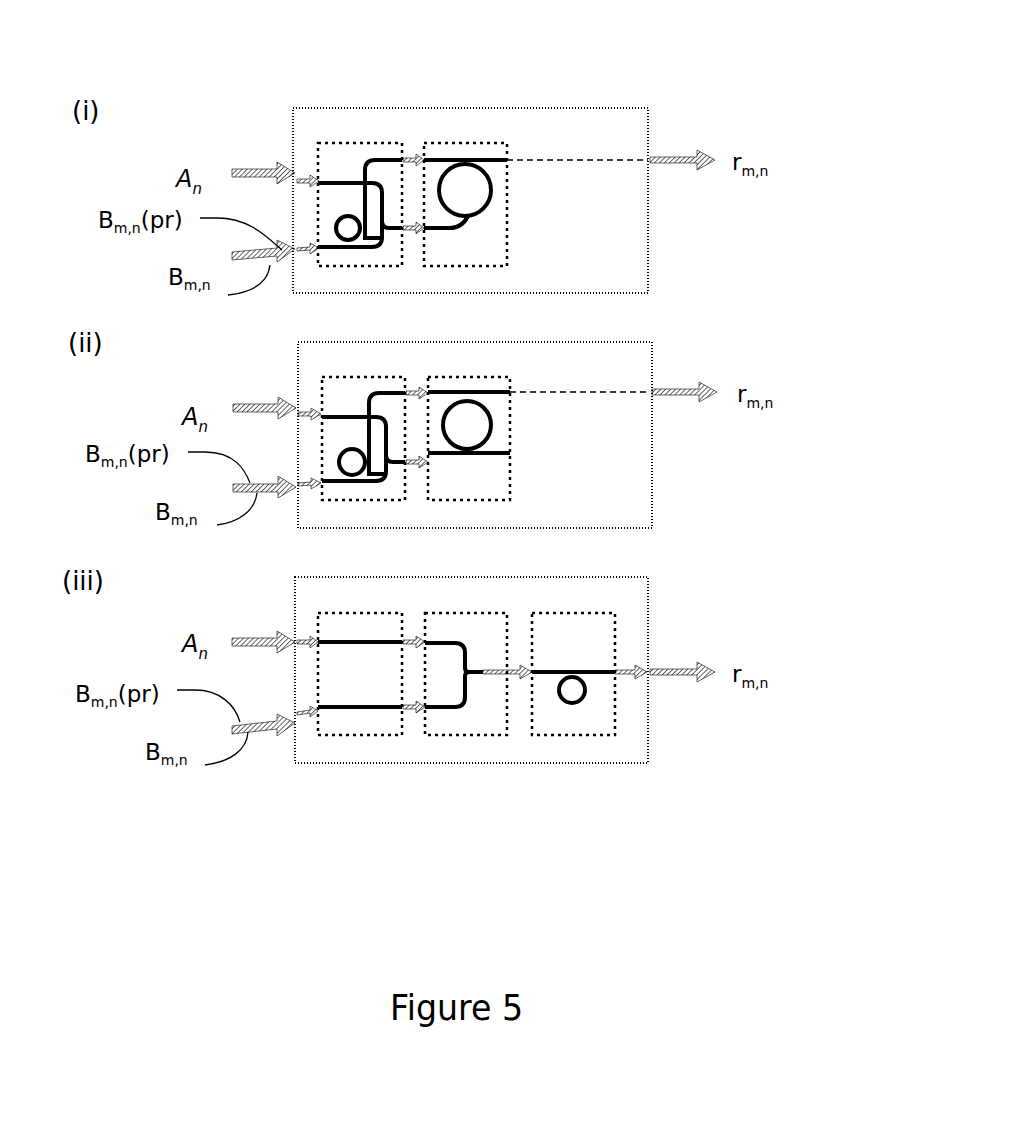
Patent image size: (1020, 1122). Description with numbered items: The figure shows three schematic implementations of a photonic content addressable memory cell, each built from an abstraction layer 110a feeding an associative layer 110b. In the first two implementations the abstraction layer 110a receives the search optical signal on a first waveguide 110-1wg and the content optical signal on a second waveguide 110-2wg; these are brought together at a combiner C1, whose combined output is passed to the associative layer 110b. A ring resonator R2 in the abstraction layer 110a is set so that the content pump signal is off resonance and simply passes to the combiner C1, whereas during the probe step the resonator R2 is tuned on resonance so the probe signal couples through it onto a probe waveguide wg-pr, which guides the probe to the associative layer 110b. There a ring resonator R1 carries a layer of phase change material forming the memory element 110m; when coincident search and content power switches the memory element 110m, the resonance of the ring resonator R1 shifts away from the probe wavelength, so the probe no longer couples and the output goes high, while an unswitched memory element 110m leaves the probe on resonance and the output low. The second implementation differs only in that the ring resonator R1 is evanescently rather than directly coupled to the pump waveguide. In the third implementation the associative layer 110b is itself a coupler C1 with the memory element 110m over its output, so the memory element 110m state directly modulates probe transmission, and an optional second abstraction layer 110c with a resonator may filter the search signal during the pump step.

The memory element 110m is at (470, 217).
The abstraction layer 110a is at (361, 425).
The associative layer 110b is at (467, 425).
The second abstraction layer 110c is at (573, 660).
The first waveguide 110-1wg is at (335, 182).
The second waveguide 110-2wg is at (333, 247).
The probe waveguide wg-pr is at (390, 160).
The combiner C1 is at (392, 235).
The ring resonator R1 is at (490, 182).
The ring resonator R2 is at (337, 217).